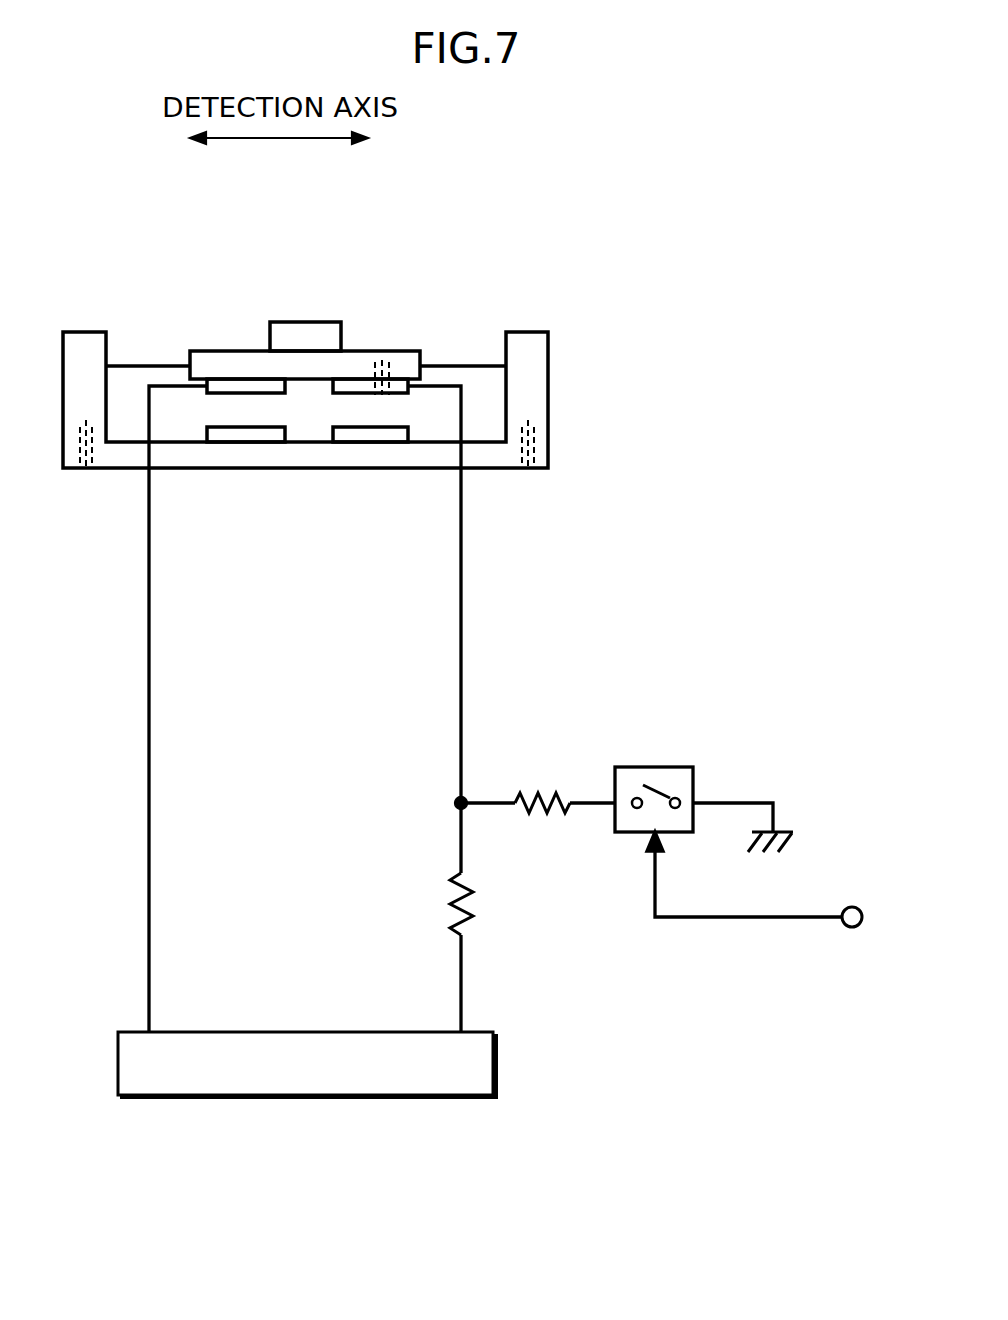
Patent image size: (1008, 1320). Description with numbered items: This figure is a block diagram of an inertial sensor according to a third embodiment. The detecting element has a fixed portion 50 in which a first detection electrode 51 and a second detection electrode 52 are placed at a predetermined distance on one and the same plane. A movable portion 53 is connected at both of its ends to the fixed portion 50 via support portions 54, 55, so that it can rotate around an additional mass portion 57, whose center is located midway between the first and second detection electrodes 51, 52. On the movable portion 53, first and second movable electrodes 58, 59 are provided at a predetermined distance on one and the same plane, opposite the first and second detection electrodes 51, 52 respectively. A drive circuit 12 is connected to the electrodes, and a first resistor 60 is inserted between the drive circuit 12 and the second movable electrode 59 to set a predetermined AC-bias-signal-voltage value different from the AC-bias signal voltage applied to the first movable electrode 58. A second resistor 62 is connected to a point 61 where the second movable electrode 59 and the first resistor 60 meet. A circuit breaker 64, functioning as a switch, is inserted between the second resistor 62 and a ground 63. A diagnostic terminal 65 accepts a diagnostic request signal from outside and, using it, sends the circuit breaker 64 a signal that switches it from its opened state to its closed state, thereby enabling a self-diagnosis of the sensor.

The drive circuit 12 is at (282, 1095).
The fixed portion 50 is at (540, 407).
The first detection electrode 51 is at (247, 437).
The second detection electrode 52 is at (377, 437).
The movable portion 53 is at (402, 349).
The support portion 54 is at (133, 365).
The support portion 55 is at (468, 365).
The additional mass portion 57 is at (287, 322).
The first movable electrode 58 is at (223, 392).
The second movable electrode 59 is at (352, 392).
The first resistor 60 is at (450, 913).
The point 61 is at (447, 803).
The second resistor 62 is at (540, 798).
The ground 63 is at (783, 832).
The circuit breaker 64 is at (645, 767).
The diagnostic terminal 65 is at (848, 903).